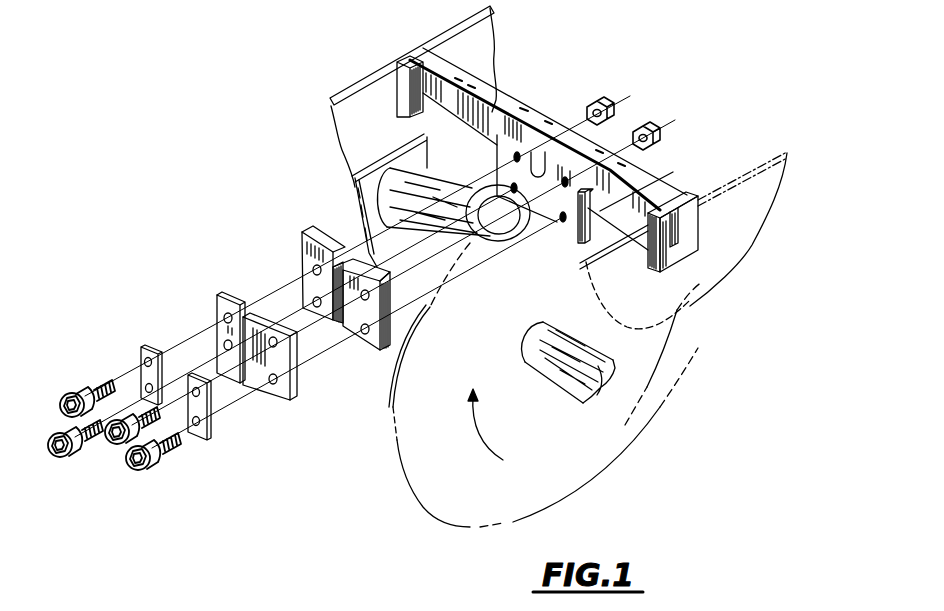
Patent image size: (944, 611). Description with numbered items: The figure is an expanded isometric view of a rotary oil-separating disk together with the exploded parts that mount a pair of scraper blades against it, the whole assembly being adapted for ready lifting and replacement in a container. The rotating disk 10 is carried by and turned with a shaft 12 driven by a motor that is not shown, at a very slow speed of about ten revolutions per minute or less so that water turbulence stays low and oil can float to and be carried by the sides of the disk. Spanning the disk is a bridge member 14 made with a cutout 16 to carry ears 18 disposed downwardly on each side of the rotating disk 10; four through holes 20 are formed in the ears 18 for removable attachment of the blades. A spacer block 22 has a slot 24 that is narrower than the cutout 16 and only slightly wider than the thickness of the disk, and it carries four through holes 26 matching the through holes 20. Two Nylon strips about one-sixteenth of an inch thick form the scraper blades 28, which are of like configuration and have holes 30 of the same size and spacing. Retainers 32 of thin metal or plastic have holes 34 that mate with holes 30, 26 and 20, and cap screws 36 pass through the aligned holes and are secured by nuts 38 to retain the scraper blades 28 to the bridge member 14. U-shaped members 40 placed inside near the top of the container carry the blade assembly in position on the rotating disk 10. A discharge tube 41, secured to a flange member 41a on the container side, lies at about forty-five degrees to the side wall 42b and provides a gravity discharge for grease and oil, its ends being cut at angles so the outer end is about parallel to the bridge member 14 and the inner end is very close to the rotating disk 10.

The rotating disk 10 is at (397, 478).
The shaft 12 is at (600, 398).
The bridge member 14 is at (522, 110).
The cutout 16 is at (540, 166).
The ears 18 is at (546, 166).
The through holes 20 is at (564, 225).
The spacer block 22 is at (304, 232).
The slot 24 is at (303, 277).
The through holes 26 is at (318, 266).
The scraper blades 28 is at (218, 312).
The holes 30 is at (283, 396).
The retainers 32 is at (176, 412).
The holes 34 is at (199, 427).
The cap screws 36 is at (152, 470).
The nuts 38 is at (658, 124).
The U-shaped members 40 is at (699, 227).
The discharge tube 41 is at (443, 185).
The flange member 41a is at (352, 182).
The side wall 42b is at (356, 80).